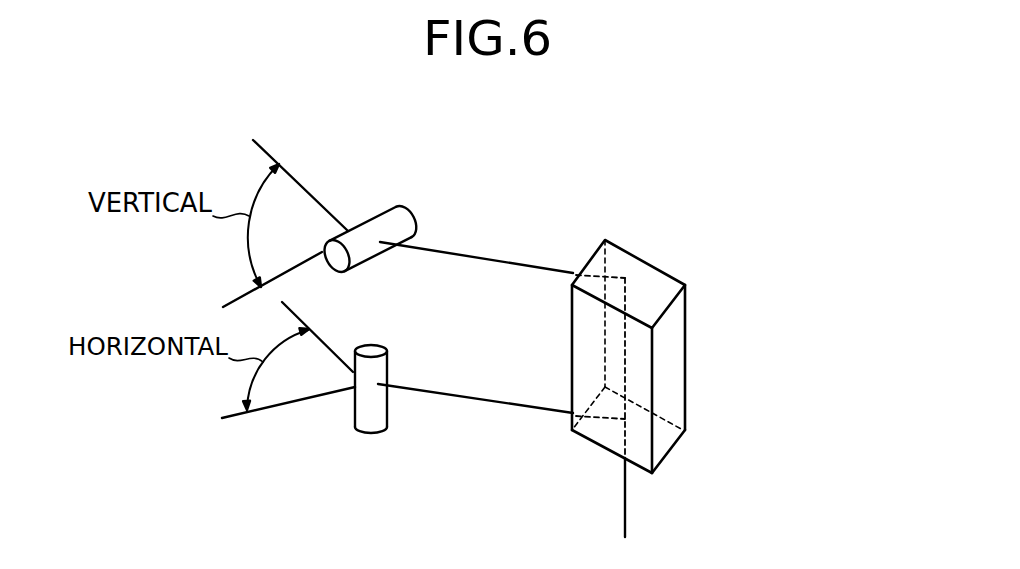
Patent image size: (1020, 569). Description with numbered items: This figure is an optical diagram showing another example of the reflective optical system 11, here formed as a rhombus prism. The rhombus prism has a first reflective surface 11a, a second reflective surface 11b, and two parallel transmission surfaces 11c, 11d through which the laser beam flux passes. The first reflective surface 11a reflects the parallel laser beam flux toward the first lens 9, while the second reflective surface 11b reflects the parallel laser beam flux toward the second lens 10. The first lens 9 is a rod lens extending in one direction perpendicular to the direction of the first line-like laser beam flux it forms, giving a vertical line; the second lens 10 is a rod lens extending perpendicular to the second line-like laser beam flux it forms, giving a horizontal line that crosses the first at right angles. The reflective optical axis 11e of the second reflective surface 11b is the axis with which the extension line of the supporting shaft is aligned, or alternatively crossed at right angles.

The first lens 9 is at (363, 228).
The second lens 10 is at (365, 413).
The reflective optical system 11 is at (600, 370).
The first reflective surface 11a is at (652, 280).
The second reflective surface 11b is at (607, 437).
The transmission surface 11c is at (571, 396).
The transmission surface 11d is at (672, 380).
The reflective optical axis 11e is at (448, 397).